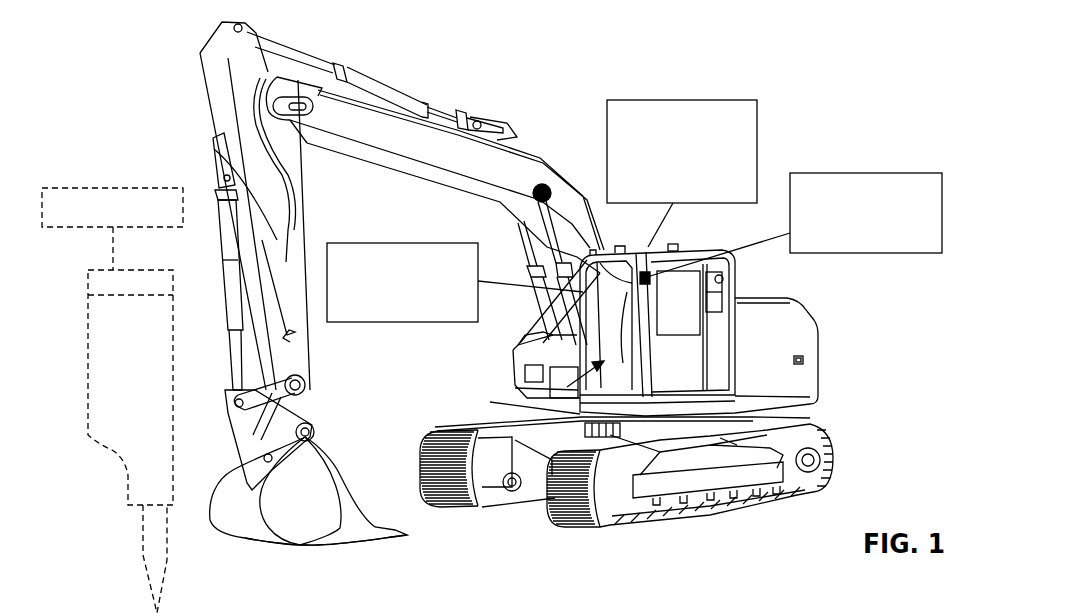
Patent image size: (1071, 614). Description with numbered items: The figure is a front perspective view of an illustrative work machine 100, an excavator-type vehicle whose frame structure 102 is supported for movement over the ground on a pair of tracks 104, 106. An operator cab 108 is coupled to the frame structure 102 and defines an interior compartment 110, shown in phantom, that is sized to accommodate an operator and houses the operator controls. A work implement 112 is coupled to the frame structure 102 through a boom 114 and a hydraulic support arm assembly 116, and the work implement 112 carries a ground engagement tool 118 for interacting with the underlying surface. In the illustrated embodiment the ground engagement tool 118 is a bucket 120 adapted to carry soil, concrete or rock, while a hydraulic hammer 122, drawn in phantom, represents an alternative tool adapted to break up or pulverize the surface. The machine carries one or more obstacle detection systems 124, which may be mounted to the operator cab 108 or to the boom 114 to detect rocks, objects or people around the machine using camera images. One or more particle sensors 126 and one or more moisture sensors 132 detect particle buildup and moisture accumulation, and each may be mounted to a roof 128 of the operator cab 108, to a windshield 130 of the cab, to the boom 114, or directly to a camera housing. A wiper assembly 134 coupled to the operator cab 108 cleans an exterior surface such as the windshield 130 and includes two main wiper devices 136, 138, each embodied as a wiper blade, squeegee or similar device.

The work machine 100 is at (838, 56).
The frame structure 102 is at (750, 405).
The track 104 is at (443, 430).
The track 106 is at (550, 508).
The operator cab 108 is at (697, 352).
The interior compartment 110 is at (662, 292).
The work implement 112 is at (323, 444).
The boom 114 is at (390, 140).
The hydraulic support arm assembly 116 is at (214, 149).
The ground engagement tool 118 is at (243, 538).
The bucket 120 is at (322, 523).
The hydraulic hammer 122 is at (108, 445).
The obstacle detection system 124 is at (674, 100).
The particle sensor 126 is at (394, 243).
The roof 128 is at (673, 250).
The windshield 130 is at (562, 172).
The moisture sensor 132 is at (858, 173).
The wiper assembly 134 is at (510, 400).
The main wiper device 136 is at (518, 339).
The main wiper device 138 is at (637, 302).